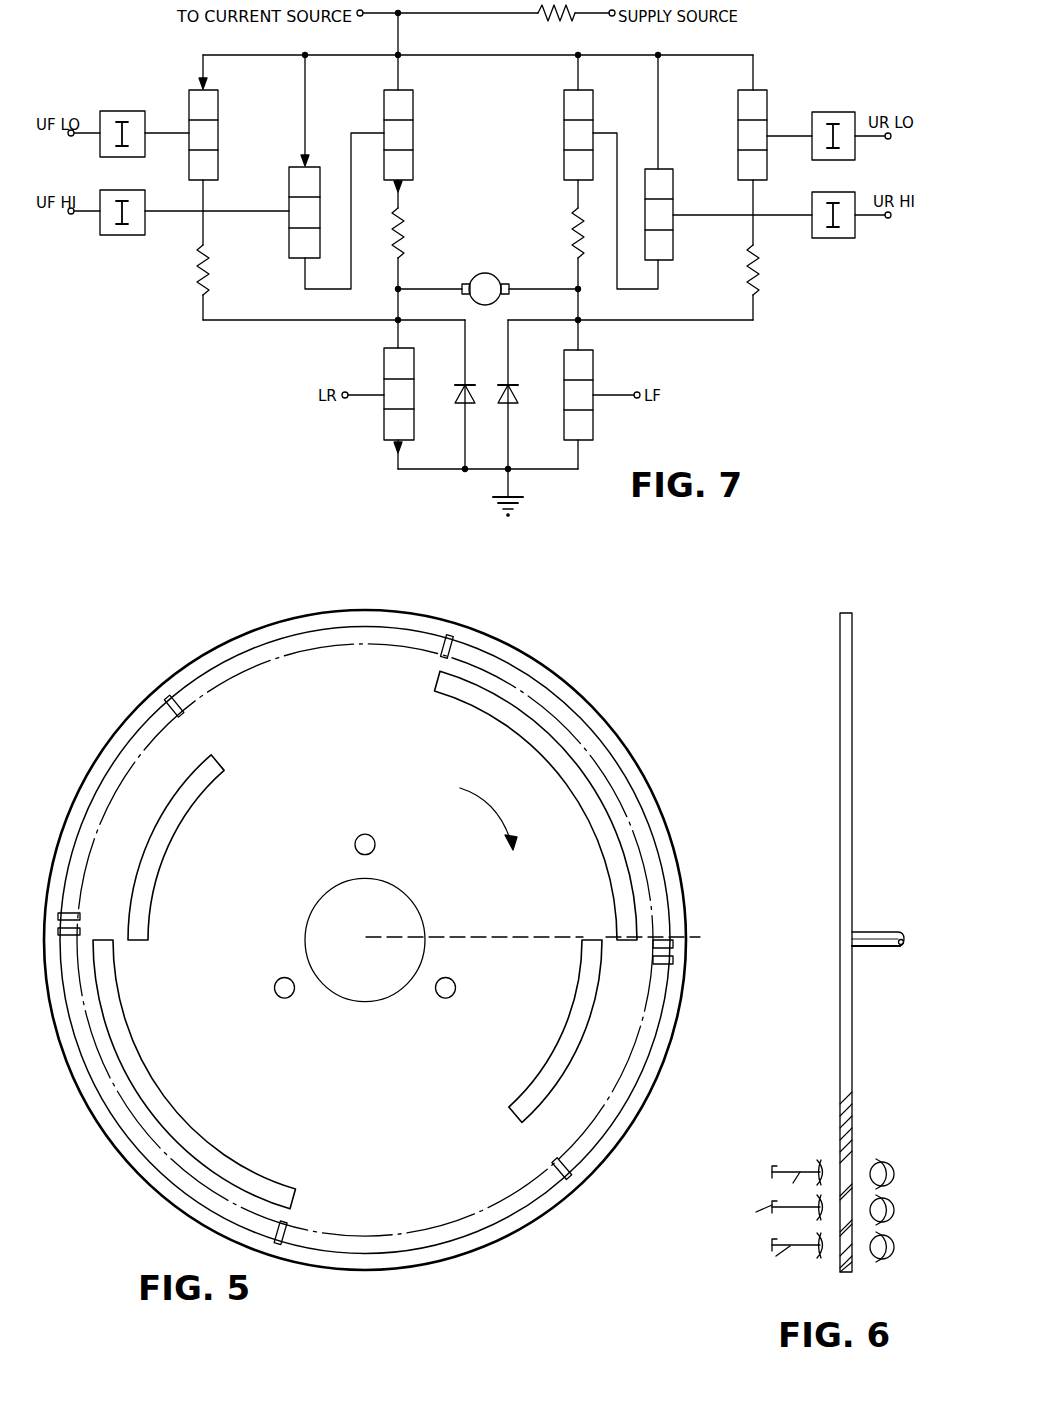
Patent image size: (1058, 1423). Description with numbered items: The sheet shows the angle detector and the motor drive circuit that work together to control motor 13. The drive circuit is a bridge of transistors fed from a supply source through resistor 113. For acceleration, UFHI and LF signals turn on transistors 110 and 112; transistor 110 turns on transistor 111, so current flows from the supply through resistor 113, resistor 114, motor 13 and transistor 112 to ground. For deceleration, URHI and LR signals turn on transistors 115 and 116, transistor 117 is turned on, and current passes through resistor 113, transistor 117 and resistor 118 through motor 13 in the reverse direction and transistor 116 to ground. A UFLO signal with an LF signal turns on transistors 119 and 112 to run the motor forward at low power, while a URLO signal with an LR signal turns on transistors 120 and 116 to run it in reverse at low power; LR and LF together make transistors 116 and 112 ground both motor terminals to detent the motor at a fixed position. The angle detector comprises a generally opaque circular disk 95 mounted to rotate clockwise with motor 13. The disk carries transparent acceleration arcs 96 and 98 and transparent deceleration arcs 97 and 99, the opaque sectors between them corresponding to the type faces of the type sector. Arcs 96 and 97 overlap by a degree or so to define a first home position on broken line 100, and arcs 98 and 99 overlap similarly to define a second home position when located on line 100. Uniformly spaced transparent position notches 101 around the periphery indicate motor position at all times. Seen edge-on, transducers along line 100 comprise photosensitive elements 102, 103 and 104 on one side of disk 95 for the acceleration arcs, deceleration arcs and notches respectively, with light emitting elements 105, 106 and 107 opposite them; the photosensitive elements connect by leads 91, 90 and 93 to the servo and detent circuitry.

In FIG. 7, the motor 13 is at (483, 273).
In FIG. 6, the lead 90 is at (753, 1214).
In FIG. 6, the lead 91 is at (789, 1187).
In FIG. 6, the lead 93 is at (773, 1260).
In FIG. 5, the circular disk 95 is at (341, 705).
In FIG. 6, the circular disk 95 is at (846, 916).
In FIG. 5, the transparent arc 96 is at (548, 757).
In FIG. 6, the transparent arc 96 is at (852, 1205).
In FIG. 5, the transparent arc 97 is at (580, 981).
In FIG. 6, the transparent arc 97 is at (851, 1170).
In FIG. 5, the transparent arc 98 is at (125, 1037).
In FIG. 5, the transparent arc 99 is at (181, 822).
In FIG. 5, the broken line 100 is at (494, 936).
In FIG. 5, the transparent position notches 101 is at (182, 712).
In FIG. 6, the transparent position notches 101 is at (852, 1250).
In FIG. 6, the photosensitive element 102 is at (821, 1160).
In FIG. 6, the photosensitive element 103 is at (820, 1212).
In FIG. 6, the photosensitive element 104 is at (816, 1258).
In FIG. 6, the light emitting element 105 is at (896, 1160).
In FIG. 6, the light emitting element 106 is at (898, 1204).
In FIG. 6, the light emitting element 107 is at (898, 1250).
In FIG. 7, the transistor 110 is at (288, 172).
In FIG. 7, the transistor 111 is at (416, 126).
In FIG. 7, the transistor 112 is at (594, 386).
In FIG. 7, the resistor 113 is at (545, 22).
In FIG. 7, the resistor 114 is at (403, 233).
In FIG. 7, the transistor 115 is at (674, 186).
In FIG. 7, the transistor 116 is at (414, 386).
In FIG. 7, the transistor 117 is at (563, 125).
In FIG. 7, the resistor 118 is at (570, 228).
In FIG. 7, the transistor 119 is at (223, 126).
In FIG. 7, the transistor 120 is at (737, 113).